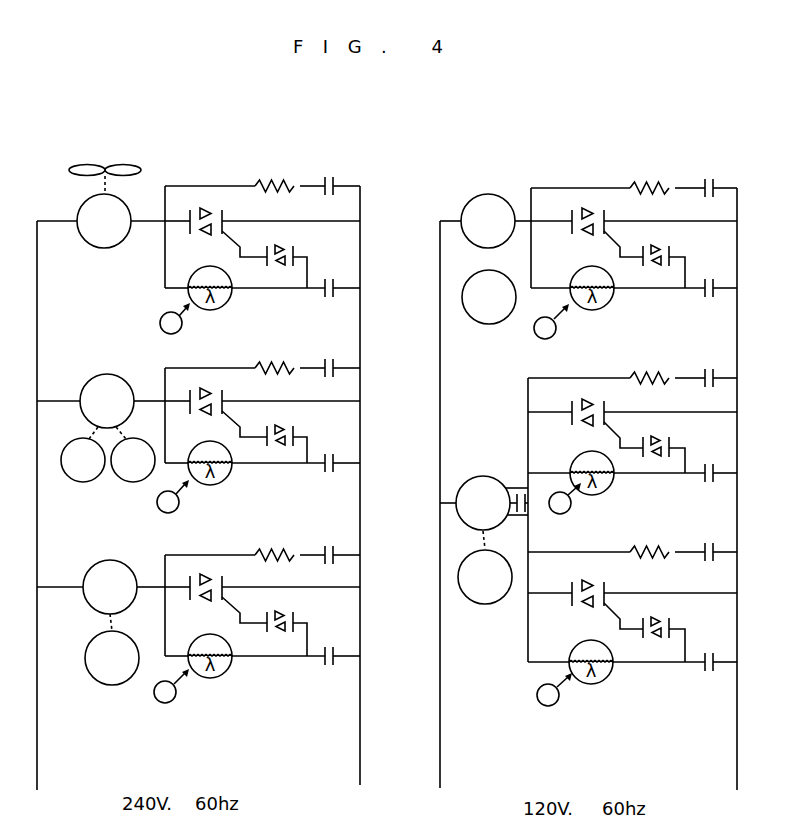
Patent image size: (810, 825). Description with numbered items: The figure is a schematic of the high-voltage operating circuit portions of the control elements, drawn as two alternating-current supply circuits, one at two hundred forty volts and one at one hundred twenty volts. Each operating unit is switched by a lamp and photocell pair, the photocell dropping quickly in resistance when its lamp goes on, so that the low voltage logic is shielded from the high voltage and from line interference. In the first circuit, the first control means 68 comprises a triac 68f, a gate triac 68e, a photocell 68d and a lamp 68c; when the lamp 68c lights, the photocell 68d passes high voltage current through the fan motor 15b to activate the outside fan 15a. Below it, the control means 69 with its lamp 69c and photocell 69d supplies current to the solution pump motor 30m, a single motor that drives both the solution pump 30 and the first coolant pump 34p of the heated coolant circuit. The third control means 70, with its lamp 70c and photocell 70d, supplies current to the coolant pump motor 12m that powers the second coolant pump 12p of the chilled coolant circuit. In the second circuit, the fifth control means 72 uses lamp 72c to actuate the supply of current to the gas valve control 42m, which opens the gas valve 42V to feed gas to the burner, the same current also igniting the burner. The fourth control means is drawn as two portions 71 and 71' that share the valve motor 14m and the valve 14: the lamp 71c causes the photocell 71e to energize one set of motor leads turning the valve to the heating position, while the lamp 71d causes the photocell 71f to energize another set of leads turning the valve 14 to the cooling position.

The outside fan 15a is at (161, 140).
The fan motor 15b is at (120, 226).
The first control means 68 is at (286, 241).
The main triac 68f is at (258, 217).
The gate triac 68e is at (279, 266).
The photocell 68d is at (271, 318).
The lamp 68c is at (160, 323).
The solution pump motor 30m is at (124, 406).
The solution pump 30 is at (83, 454).
The first coolant pump 34p is at (149, 465).
The control means 69 is at (287, 433).
The lamp 69c is at (157, 508).
The photocell 69d is at (221, 476).
The coolant pump motor 12m is at (110, 587).
The second coolant pump 12p is at (128, 663).
The third control means 70 is at (289, 629).
The lamp 70c is at (157, 702).
The photocell 70d is at (221, 669).
The gas valve control 42m is at (505, 226).
The gas valve 42V is at (489, 297).
The fifth control means 72 is at (663, 293).
The lamp 72c is at (552, 335).
The portion of fourth control means 71 is at (599, 440).
The lamp 71c is at (614, 535).
The photocell 71e is at (608, 486).
The valve motor 14m is at (500, 508).
The valve 14 is at (485, 567).
The portion of fourth control means 71' is at (600, 591).
The lamp 71d is at (546, 706).
The photocell 71f is at (638, 703).